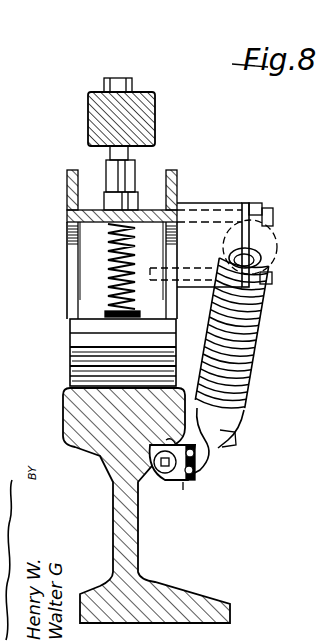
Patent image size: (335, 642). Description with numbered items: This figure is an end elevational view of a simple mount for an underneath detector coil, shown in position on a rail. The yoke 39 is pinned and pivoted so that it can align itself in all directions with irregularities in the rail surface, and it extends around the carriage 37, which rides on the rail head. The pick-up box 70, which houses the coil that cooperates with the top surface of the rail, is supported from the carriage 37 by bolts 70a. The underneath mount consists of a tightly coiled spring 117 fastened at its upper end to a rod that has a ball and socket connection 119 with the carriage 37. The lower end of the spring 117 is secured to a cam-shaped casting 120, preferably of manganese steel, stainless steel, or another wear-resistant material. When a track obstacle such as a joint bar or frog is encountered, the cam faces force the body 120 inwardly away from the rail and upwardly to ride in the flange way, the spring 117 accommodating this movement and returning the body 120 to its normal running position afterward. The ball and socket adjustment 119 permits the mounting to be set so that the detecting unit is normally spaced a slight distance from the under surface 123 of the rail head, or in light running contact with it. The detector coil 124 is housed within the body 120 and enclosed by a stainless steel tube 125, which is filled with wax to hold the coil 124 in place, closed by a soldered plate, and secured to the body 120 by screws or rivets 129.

The yoke 39 is at (157, 120).
The carriage 37 is at (67, 200).
The bolts 70a is at (110, 258).
The pick-up box 70 is at (78, 340).
The ball and socket connection 119 is at (278, 239).
The tightly coiled spring 117 is at (248, 350).
The stainless steel tube 125 is at (163, 482).
The cam-shaped casting 120 is at (205, 456).
The screws or rivets 129 is at (187, 476).
The detector coil 124 is at (181, 486).
The under surface of the rail head 123 is at (172, 442).